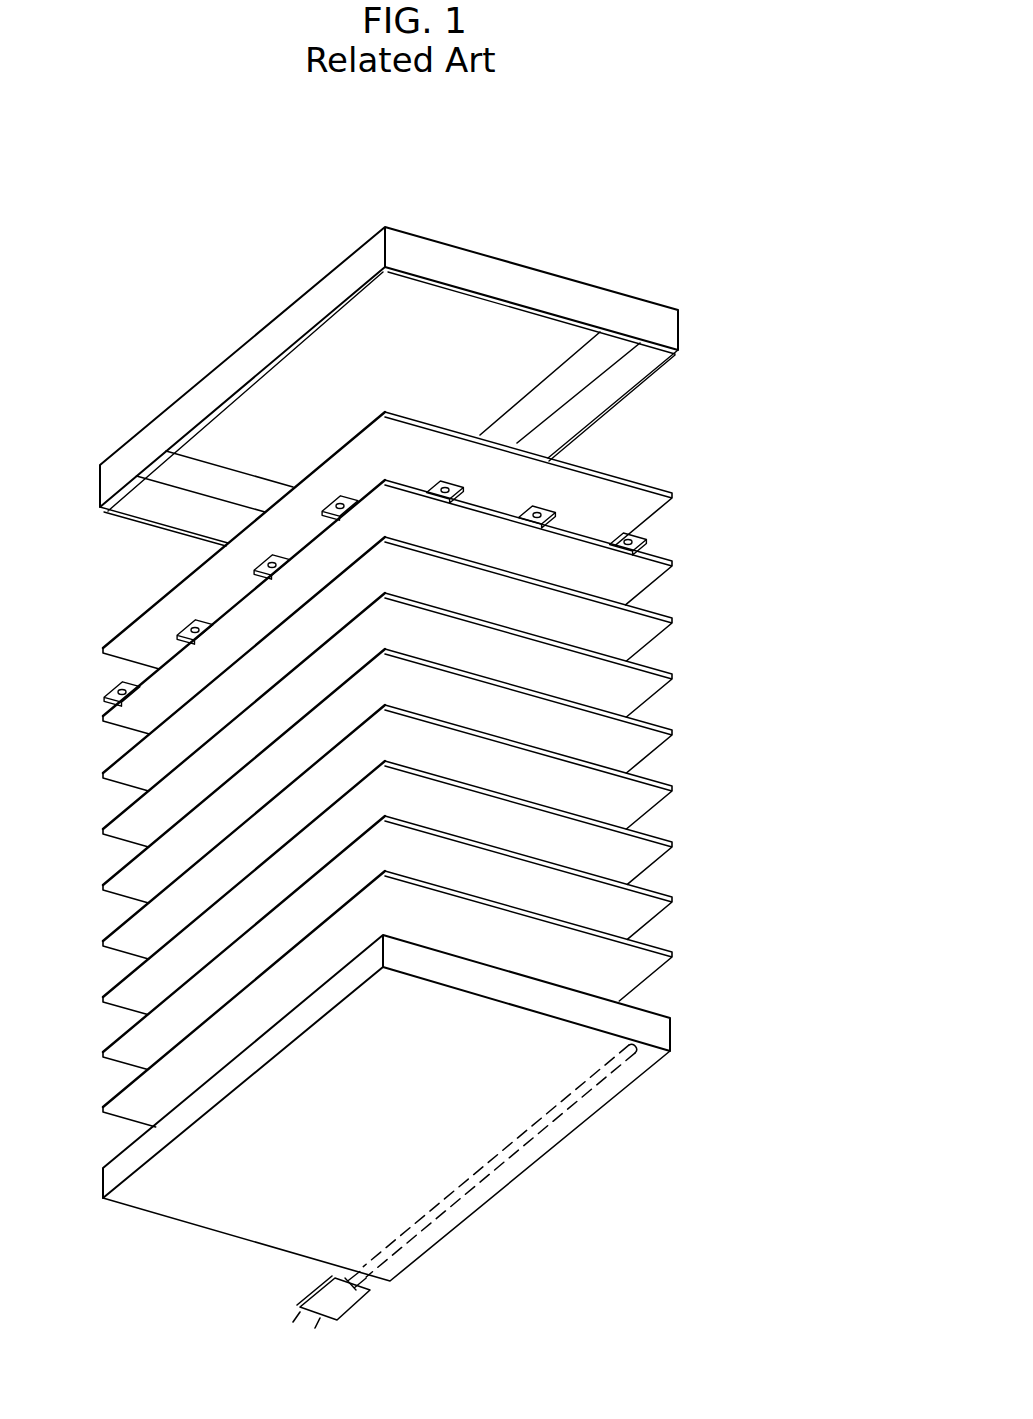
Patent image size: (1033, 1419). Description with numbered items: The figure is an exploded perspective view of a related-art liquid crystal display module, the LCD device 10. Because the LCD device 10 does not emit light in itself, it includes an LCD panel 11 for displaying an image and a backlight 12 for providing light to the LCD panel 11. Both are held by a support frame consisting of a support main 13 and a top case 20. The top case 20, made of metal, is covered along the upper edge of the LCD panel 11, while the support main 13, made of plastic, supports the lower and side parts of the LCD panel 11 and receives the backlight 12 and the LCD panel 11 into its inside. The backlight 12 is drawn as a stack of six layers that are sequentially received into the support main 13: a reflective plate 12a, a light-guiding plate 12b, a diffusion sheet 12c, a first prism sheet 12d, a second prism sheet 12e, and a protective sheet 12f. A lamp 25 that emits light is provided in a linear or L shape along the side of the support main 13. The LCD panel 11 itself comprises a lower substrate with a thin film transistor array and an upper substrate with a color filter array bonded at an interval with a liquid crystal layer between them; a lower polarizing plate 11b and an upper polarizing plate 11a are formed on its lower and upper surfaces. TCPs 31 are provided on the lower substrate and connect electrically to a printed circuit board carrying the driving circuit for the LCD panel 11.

The LCD device 10 is at (657, 186).
The top case 20 is at (668, 327).
The upper polarizing plate 11a is at (643, 482).
The TCPs (Tape Carrier Package) 31 is at (642, 546).
The LCD panel 11 is at (416, 607).
The lower polarizing plate 11b is at (658, 613).
The backlight 12 is at (463, 860).
The protective sheet 12f is at (660, 671).
The second prism sheet 12e is at (660, 727).
The first prism sheet 12d is at (660, 783).
The diffusion sheet 12c is at (660, 838).
The light-guiding plate 12b is at (660, 893).
The reflective plate 12a is at (427, 999).
The support main 13 is at (422, 1131).
The lamp 25 is at (573, 1108).